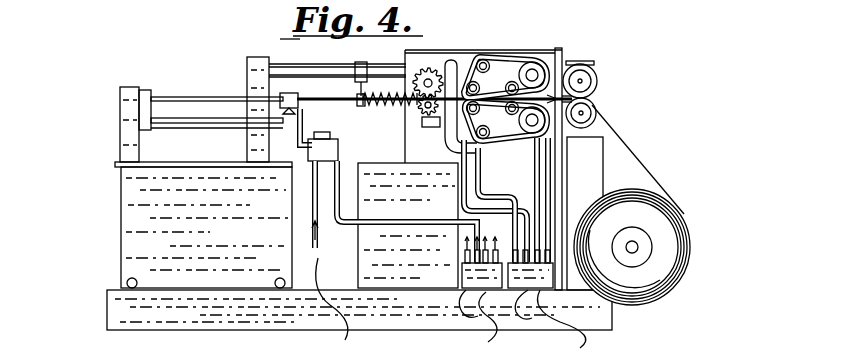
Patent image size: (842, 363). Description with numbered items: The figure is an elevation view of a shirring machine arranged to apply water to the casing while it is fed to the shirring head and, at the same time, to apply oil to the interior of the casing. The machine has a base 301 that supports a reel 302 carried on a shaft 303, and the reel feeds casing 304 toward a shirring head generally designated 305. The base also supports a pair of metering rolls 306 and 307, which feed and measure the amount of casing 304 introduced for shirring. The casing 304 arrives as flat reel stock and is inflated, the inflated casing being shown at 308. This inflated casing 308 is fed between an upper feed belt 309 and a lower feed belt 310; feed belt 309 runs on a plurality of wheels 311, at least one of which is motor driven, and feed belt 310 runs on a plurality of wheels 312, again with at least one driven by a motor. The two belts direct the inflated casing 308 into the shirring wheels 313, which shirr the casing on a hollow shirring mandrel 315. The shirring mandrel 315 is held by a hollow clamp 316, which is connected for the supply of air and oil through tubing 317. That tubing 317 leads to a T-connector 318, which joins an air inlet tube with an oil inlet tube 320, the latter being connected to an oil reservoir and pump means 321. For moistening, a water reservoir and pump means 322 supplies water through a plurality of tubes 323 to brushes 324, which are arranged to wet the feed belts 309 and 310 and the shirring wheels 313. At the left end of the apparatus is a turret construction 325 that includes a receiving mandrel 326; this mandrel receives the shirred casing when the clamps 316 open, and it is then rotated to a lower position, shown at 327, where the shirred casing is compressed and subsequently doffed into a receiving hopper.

The base 301 is at (612, 318).
The reel 302 is at (646, 260).
The shaft 303 is at (640, 247).
The casing 304 is at (648, 172).
The shirring head 305 is at (564, 48).
The metering roll 306 is at (598, 80).
The metering roll 307 is at (569, 137).
The inflated casing 308 is at (571, 62).
The upper feed belt 309 is at (492, 52).
The lower feed belt 310 is at (500, 138).
The wheels 311 is at (490, 70).
The wheels 312 is at (480, 112).
The shirring wheels 313 is at (426, 77).
The hollow shirring mandrel 315 is at (307, 102).
The hollow clamp 316 is at (296, 91).
The tubing 317 is at (303, 127).
The T-connector 318 is at (338, 139).
The oil inlet tube 320 is at (366, 222).
The oil reservoir and pump means 321 is at (480, 296).
The water reservoir and pump means 322 is at (547, 302).
The tubes 323 is at (540, 190).
The brushes 324 is at (441, 62).
The turret construction 325 is at (119, 127).
The receiving mandrel 326 is at (215, 98).
The lower position 327 is at (210, 130).